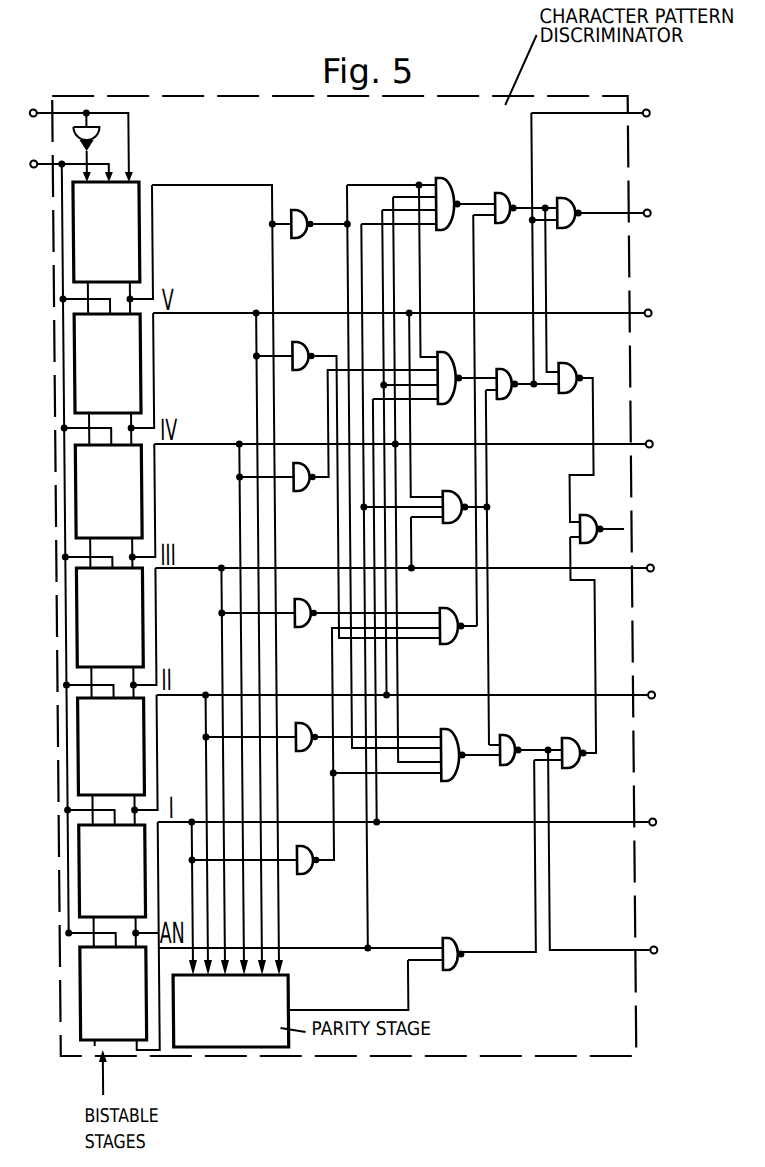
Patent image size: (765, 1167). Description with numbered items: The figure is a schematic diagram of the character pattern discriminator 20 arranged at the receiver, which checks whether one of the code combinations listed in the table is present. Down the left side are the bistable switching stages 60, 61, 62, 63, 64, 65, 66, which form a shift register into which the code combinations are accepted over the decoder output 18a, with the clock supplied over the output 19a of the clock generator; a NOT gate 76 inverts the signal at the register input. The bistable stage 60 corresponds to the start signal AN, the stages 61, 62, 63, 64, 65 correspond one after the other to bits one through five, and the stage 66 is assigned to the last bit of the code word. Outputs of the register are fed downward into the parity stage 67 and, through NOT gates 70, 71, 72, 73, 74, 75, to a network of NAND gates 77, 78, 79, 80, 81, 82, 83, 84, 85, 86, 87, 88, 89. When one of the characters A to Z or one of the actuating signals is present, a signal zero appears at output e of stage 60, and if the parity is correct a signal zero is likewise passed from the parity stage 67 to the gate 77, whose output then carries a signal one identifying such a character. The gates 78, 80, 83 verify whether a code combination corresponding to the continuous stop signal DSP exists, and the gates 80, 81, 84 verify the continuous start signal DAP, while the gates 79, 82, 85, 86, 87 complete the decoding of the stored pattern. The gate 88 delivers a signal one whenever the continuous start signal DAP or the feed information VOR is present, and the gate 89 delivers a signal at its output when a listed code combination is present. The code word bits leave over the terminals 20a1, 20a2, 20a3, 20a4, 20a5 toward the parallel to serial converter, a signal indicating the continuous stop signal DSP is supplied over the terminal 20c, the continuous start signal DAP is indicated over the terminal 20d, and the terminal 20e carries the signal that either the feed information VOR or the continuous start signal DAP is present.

The output 18a is at (77, 131).
The output 19a is at (67, 157).
The character pattern discriminator 20 is at (344, 557).
The bistable switching stage 60 is at (120, 998).
The bistable switching stage 61 is at (111, 885).
The bistable switching stage 62 is at (110, 760).
The bistable switching stage 63 is at (109, 633).
The bistable switching stage 64 is at (108, 506).
The bistable switching stage 65 is at (107, 379).
The bistable switching stage 66 is at (105, 248).
The parity stage 67 is at (277, 995).
The NOT gate 70 is at (364, 771).
The NOT gate 71 is at (365, 757).
The NOT gate 72 is at (364, 633).
The NOT gate 73 is at (363, 450).
The NOT gate 74 is at (363, 490).
The NOT gate 75 is at (319, 244).
The NOT gate 76 is at (101, 147).
The NAND gate 77 is at (377, 974).
The NAND gate 78 is at (467, 775).
The NAND gate 79 is at (456, 645).
The NAND gate 80 is at (465, 523).
The NAND gate 81 is at (463, 397).
The NAND gate 82 is at (463, 222).
The NAND gate 83 is at (526, 762).
The NAND gate 84 is at (524, 557).
The NAND gate 85 is at (517, 409).
The NAND gate 86 is at (523, 845).
The NAND gate 87 is at (576, 442).
The NAND gate 88 is at (576, 224).
The NAND gate 89 is at (598, 623).
The input 20a1 is at (407, 809).
The input 20a2 is at (407, 680).
The input 20a3 is at (407, 588).
The input 20a4 is at (406, 430).
The input 20a5 is at (404, 297).
The input 20c is at (610, 852).
The input 20d is at (599, 233).
The input 20e is at (623, 197).